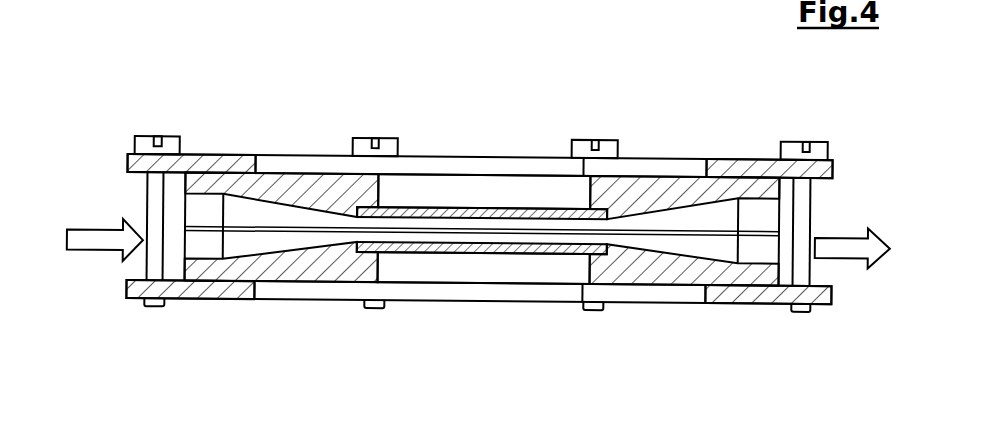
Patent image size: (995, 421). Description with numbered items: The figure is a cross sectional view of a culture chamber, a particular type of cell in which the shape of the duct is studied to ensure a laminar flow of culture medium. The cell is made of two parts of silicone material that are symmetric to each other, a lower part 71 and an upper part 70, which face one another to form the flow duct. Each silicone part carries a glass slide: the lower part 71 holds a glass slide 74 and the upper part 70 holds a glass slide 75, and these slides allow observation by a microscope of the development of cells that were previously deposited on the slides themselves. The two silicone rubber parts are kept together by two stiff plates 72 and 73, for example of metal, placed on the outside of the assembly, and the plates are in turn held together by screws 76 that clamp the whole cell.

The upper part 70 is at (300, 197).
The lower part 71 is at (302, 260).
The stiff plate 72 is at (202, 287).
The stiff plate 73 is at (728, 170).
The glass slide 74 is at (507, 245).
The glass slide 75 is at (485, 207).
The screws 76 is at (164, 145).